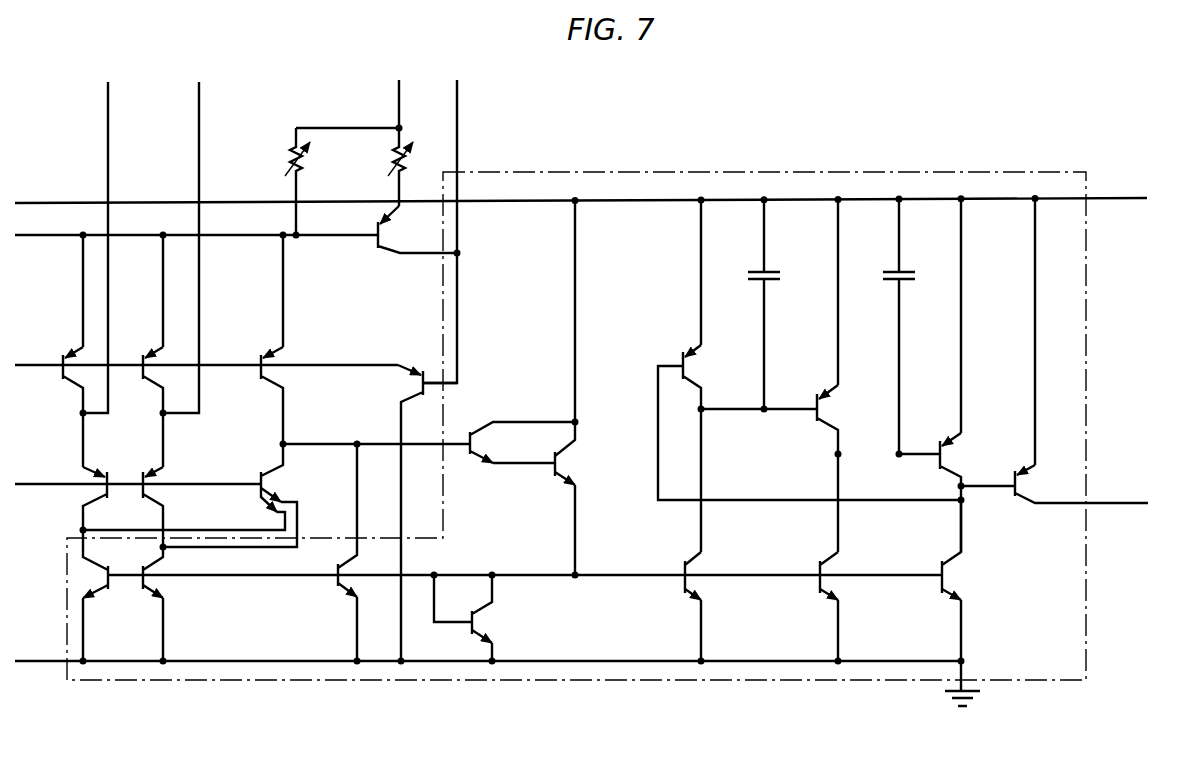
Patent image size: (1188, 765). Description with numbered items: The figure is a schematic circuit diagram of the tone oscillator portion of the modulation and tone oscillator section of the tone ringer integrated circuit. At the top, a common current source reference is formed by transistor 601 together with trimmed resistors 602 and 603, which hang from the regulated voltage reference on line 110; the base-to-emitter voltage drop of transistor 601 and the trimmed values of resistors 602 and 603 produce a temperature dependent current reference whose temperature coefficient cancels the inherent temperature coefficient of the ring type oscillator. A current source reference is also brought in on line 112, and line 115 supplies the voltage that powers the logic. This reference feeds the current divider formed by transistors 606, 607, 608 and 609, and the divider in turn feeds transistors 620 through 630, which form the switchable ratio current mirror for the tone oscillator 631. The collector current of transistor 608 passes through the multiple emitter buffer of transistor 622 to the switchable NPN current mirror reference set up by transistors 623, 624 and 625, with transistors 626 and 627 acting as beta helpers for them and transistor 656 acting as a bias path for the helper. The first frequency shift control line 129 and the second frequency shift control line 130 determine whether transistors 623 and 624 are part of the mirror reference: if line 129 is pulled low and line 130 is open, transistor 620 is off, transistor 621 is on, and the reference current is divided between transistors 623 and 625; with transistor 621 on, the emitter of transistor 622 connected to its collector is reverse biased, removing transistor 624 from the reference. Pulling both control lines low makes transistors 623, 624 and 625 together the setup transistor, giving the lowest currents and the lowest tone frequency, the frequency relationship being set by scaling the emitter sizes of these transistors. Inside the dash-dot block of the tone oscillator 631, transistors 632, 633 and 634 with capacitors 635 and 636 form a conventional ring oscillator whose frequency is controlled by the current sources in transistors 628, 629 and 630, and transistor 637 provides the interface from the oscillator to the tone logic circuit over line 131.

The line 110 is at (404, 92).
The line 112 is at (450, 220).
The line 115 is at (599, 199).
The first frequency shift control line 129 is at (104, 235).
The second frequency shift control line 130 is at (190, 235).
The line 131 is at (1118, 504).
The transistor 601 is at (417, 229).
The resistor 602 is at (385, 167).
The resistor 603 is at (327, 181).
The transistor 606 is at (56, 351).
The transistor 607 is at (139, 351).
The transistor 608 is at (257, 339).
The transistor 609 is at (415, 513).
The transistor 620 is at (111, 490).
The transistor 621 is at (173, 500).
The multiple emitter buffer transistor 622 is at (202, 495).
The transistor 623 is at (106, 595).
The transistor 624 is at (176, 604).
The transistor 625 is at (332, 552).
The transistor 626 is at (429, 442).
The transistor 627 is at (582, 387).
The transistor 628 is at (969, 580).
The transistor 629 is at (714, 604).
The transistor 630 is at (850, 604).
The tone oscillator 631 is at (862, 172).
The transistor 632 is at (809, 376).
The transistor 633 is at (786, 376).
The transistor 634 is at (946, 375).
The capacitor 635 is at (783, 304).
The capacitor 636 is at (918, 327).
The transistor 637 is at (1016, 351).
The transistor 656 is at (480, 618).